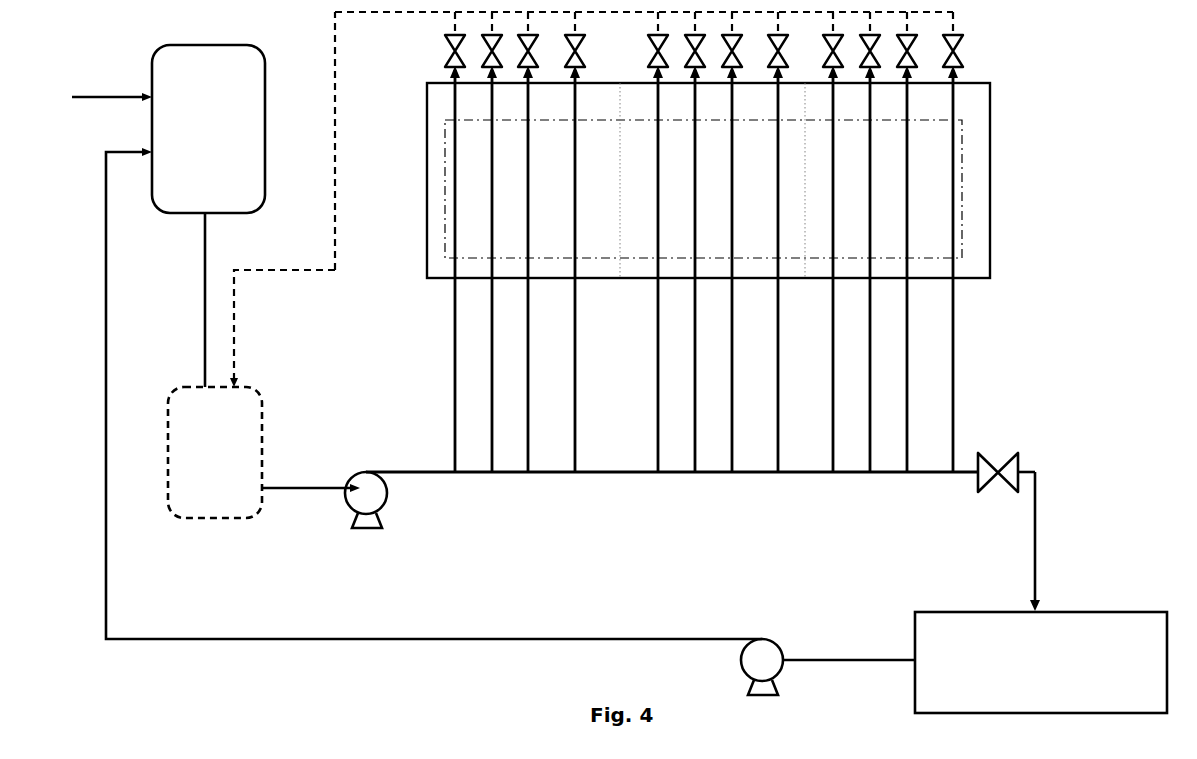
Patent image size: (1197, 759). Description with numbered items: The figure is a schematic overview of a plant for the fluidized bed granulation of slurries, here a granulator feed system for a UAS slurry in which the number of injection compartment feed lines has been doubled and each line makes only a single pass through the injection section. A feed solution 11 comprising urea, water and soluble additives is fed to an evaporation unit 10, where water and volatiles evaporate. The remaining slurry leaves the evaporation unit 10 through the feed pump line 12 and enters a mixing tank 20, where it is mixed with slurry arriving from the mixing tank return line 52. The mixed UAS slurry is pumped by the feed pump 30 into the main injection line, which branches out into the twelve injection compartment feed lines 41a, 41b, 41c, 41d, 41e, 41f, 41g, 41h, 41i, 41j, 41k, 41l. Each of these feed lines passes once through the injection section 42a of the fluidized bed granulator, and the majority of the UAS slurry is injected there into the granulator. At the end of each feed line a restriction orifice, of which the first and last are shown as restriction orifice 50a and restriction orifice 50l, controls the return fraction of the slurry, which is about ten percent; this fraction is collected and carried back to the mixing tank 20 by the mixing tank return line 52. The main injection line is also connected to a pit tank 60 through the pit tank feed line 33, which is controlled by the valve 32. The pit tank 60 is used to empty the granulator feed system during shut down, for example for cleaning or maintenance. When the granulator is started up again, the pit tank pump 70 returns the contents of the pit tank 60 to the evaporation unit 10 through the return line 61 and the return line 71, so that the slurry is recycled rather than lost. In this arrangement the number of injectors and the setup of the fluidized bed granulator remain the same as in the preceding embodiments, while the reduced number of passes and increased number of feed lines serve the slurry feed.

The evaporation unit 10 is at (208, 129).
The feed solution 11 is at (112, 81).
The feed pump line 12 is at (188, 300).
The mixing tank 20 is at (215, 452).
The feed pump 30 is at (324, 500).
The valve 32 is at (1006, 484).
The pit tank feed line 33 is at (1051, 541).
The injection compartment feed line 41a is at (434, 269).
The injection compartment feed line 41b is at (476, 269).
The injection compartment feed line 41c is at (512, 269).
The injection compartment feed line 41d is at (557, 269).
The injection compartment feed line 41e is at (639, 269).
The injection compartment feed line 41f is at (680, 269).
The injection compartment feed line 41g is at (716, 269).
The injection compartment feed line 41h is at (759, 269).
The injection compartment feed line 41i is at (820, 269).
The injection compartment feed line 41j is at (857, 269).
The injection compartment feed line 41k is at (892, 269).
The injection compartment feed line 41l is at (939, 269).
The injection section 42a is at (687, 180).
The restriction orifice 50a is at (437, 51).
The restriction orifice 50l is at (972, 51).
The mixing tank return line 52 is at (282, 315).
The pit tank 60 is at (1041, 662).
The return line 61 is at (849, 646).
The pit tank pump 70 is at (762, 667).
The return line 71 is at (434, 393).